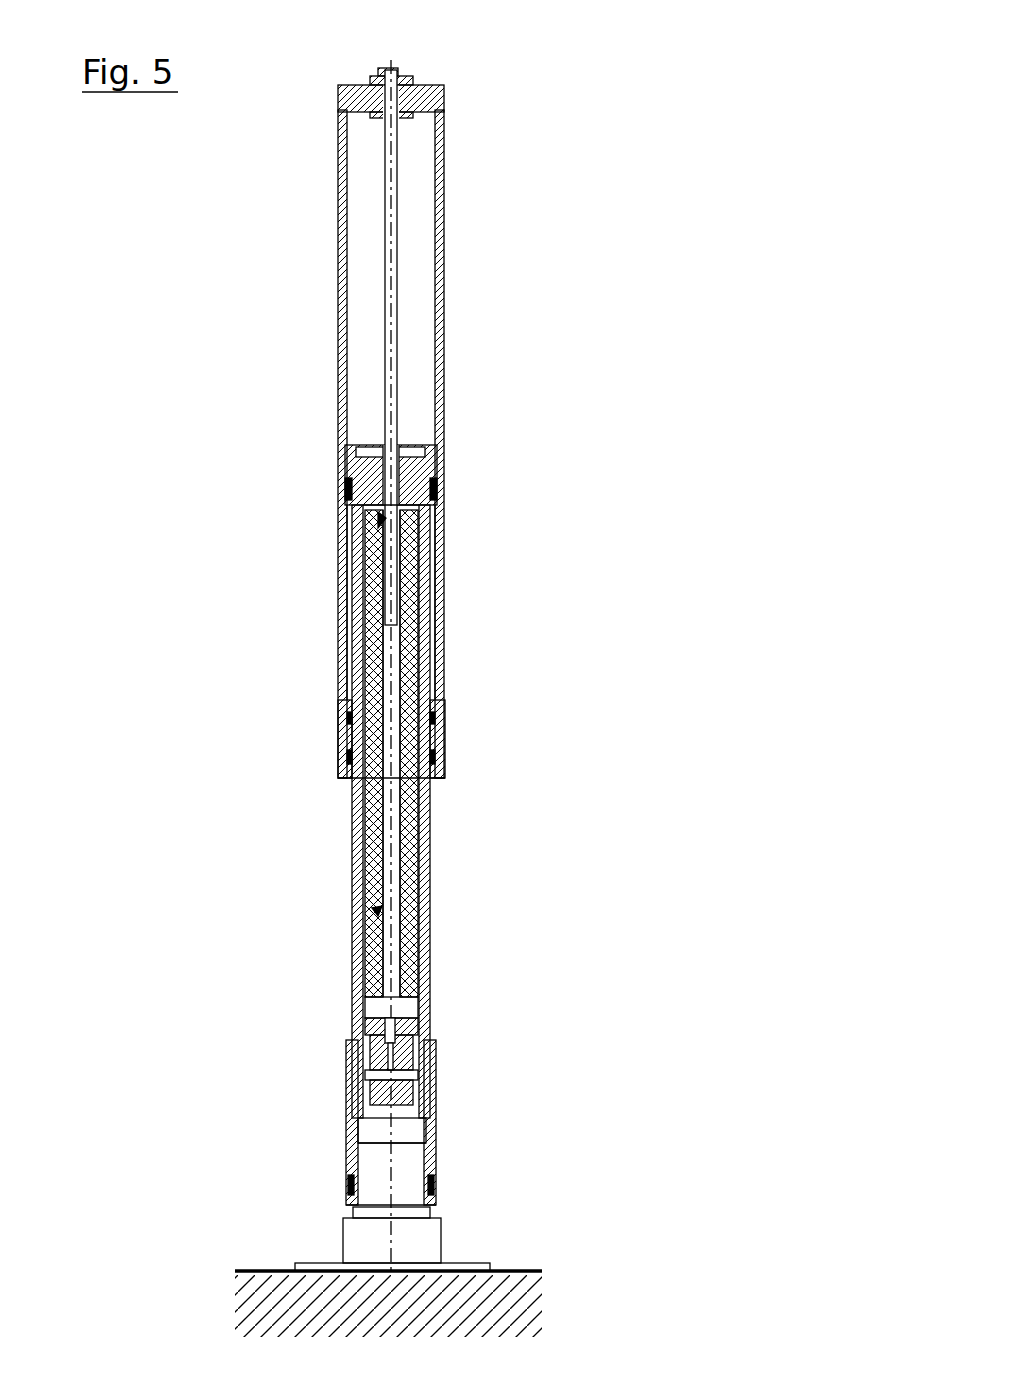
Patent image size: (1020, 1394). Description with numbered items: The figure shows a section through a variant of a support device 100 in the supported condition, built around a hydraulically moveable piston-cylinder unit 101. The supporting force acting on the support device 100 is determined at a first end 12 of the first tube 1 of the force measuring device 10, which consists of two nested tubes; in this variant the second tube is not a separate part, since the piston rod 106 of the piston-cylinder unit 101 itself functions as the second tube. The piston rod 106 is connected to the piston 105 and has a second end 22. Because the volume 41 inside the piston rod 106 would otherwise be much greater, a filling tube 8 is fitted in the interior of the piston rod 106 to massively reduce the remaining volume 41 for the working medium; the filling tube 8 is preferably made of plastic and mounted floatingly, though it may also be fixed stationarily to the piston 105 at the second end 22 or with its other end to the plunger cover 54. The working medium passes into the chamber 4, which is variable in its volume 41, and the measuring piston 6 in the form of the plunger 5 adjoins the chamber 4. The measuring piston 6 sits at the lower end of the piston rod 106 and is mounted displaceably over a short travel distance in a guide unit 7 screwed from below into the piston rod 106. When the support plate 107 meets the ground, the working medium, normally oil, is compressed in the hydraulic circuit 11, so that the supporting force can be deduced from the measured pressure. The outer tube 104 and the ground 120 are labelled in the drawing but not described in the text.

The support device 100 is at (401, 397).
The piston-cylinder unit 101 is at (495, 665).
The outer tube 104 is at (445, 270).
The piston 105 is at (437, 478).
The piston rod 106 is at (430, 940).
The support plate 107 is at (490, 1265).
The ground 120 is at (515, 1312).
The first end 12 is at (420, 72).
The first tube 1 is at (397, 358).
The second end 22 is at (350, 578).
The hydraulic circuit 11 is at (395, 815).
The filling tube 8 is at (410, 850).
The force measuring device 10 is at (380, 912).
The chamber 4 is at (418, 1008).
The plunger cover 54 is at (430, 1022).
The volume 41 is at (380, 1006).
The guide unit 7 is at (435, 1118).
The plunger 5 is at (503, 1137).
The measuring piston 6 is at (400, 1134).